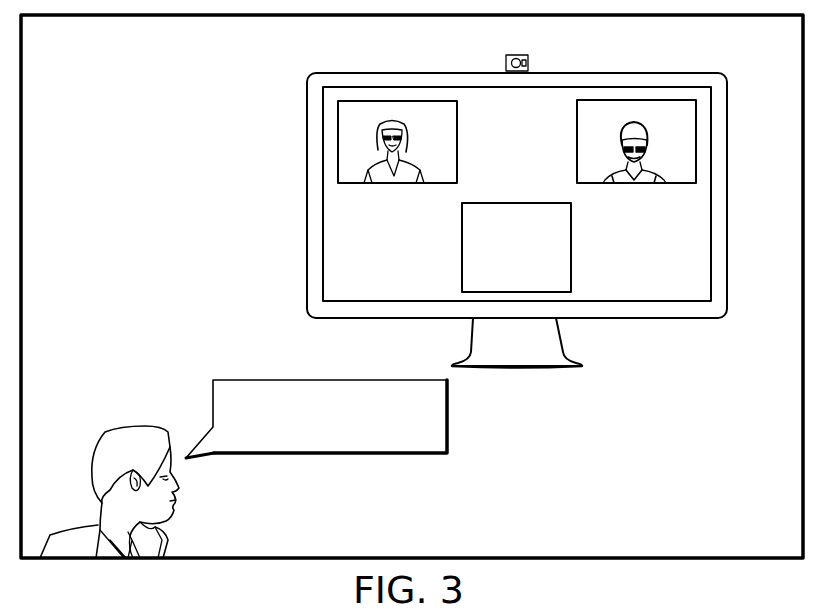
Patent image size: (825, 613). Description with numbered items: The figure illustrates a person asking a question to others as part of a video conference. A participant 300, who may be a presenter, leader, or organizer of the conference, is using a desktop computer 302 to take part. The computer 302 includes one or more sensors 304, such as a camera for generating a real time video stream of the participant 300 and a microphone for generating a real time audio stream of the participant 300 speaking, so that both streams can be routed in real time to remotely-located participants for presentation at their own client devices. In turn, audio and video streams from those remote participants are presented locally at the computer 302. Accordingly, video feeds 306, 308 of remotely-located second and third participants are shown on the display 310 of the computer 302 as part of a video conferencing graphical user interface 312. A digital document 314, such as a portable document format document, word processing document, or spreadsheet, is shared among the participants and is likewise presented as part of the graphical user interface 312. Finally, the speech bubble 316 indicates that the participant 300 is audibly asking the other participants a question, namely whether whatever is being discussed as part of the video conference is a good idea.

The participant 300 is at (130, 430).
The desktop computer 302 is at (307, 215).
The sensors 304 is at (506, 61).
The video feed 306 is at (458, 152).
The video feed 308 is at (577, 106).
The display 310 is at (323, 158).
The video conferencing graphical user interface 312 is at (705, 299).
The digital document 314 is at (572, 248).
The speech bubble 316 is at (327, 380).